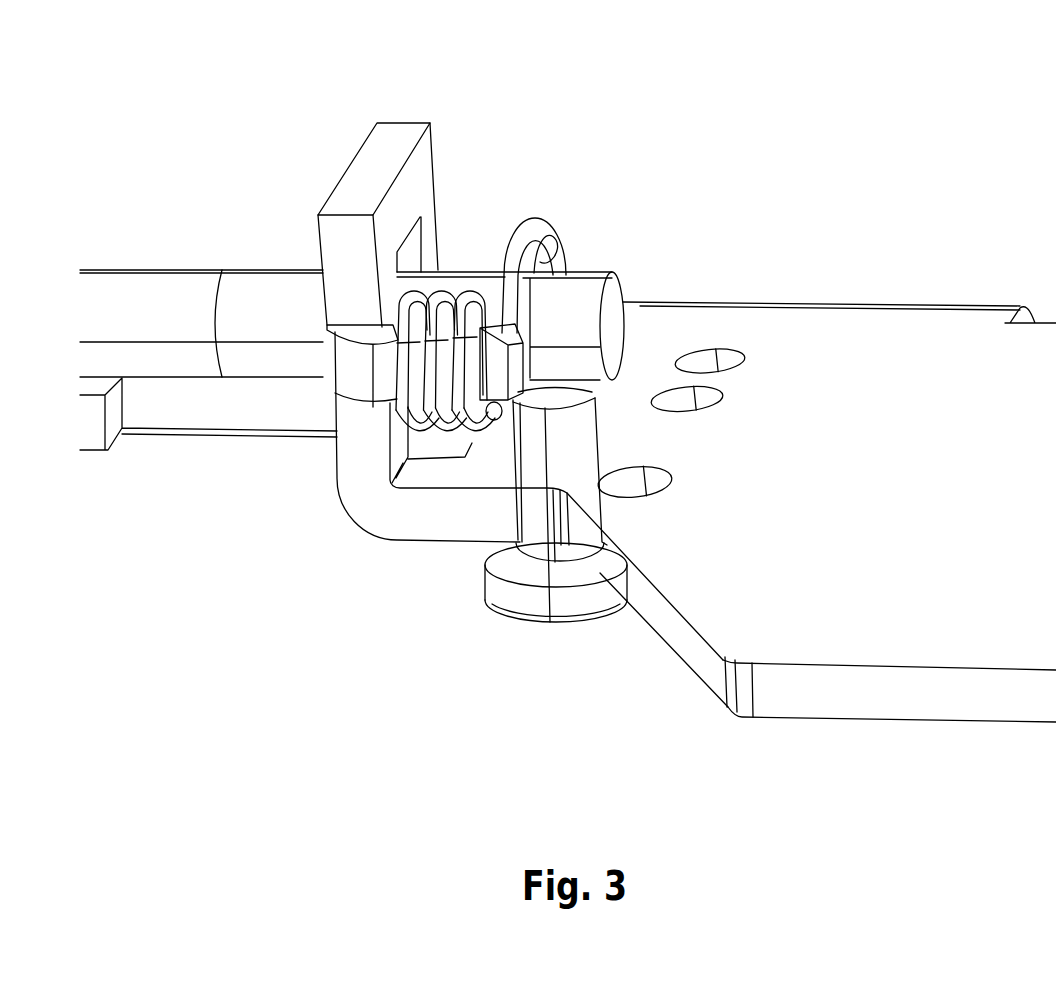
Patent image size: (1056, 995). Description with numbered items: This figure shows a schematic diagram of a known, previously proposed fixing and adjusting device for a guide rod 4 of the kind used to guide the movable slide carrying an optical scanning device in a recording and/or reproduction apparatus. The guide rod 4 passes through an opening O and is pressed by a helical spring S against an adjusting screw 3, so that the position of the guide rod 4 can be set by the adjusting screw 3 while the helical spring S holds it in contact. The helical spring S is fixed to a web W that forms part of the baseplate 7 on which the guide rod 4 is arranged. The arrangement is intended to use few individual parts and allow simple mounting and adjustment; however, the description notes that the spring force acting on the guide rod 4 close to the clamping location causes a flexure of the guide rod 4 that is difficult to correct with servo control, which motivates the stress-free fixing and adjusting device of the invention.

The guide rod 4 is at (277, 305).
The opening O is at (410, 248).
The web W is at (383, 375).
The helical spring S is at (433, 427).
The adjusting screw 3 is at (520, 585).
The baseplate 7 is at (838, 335).